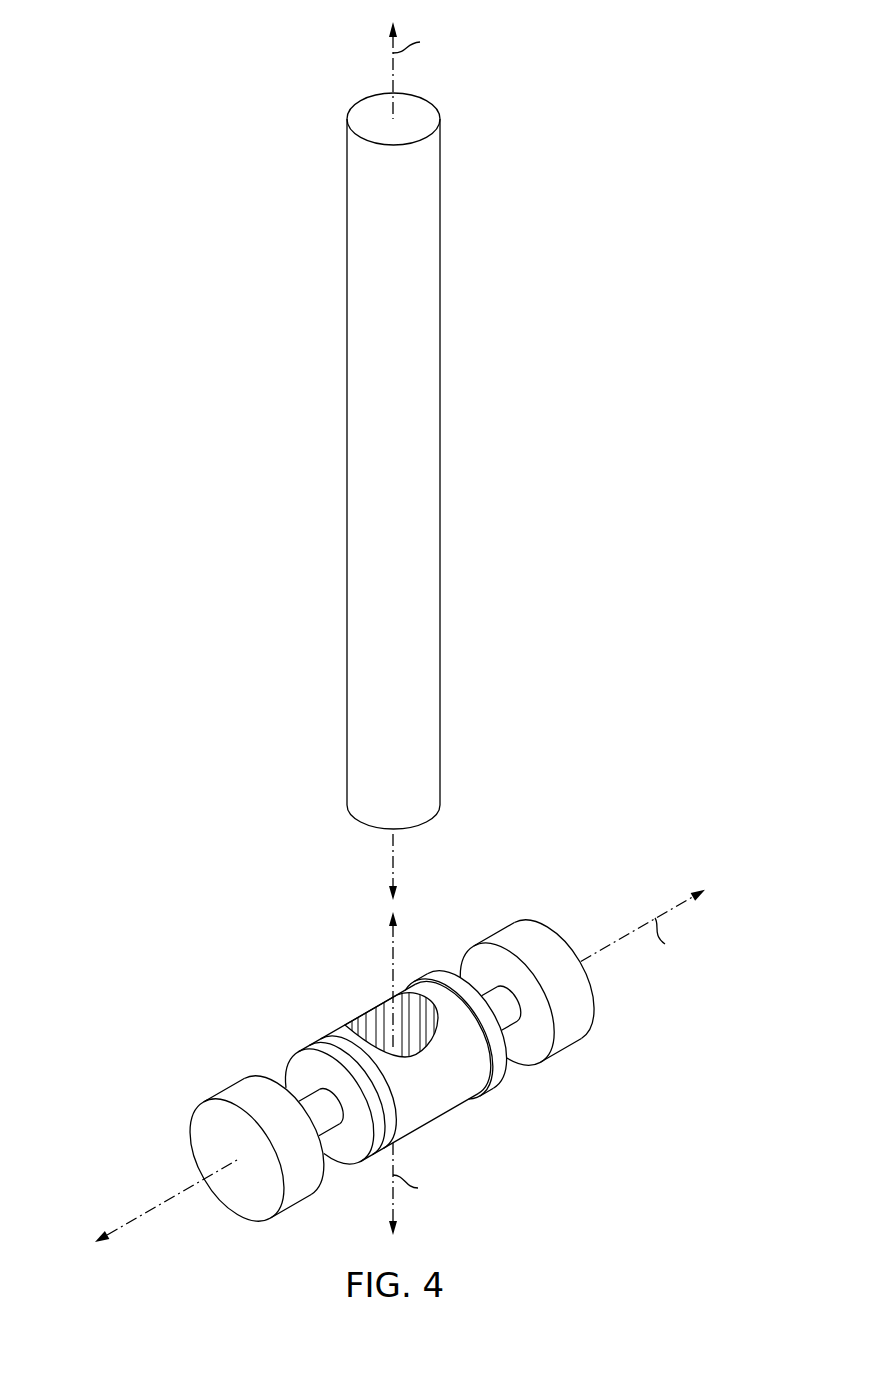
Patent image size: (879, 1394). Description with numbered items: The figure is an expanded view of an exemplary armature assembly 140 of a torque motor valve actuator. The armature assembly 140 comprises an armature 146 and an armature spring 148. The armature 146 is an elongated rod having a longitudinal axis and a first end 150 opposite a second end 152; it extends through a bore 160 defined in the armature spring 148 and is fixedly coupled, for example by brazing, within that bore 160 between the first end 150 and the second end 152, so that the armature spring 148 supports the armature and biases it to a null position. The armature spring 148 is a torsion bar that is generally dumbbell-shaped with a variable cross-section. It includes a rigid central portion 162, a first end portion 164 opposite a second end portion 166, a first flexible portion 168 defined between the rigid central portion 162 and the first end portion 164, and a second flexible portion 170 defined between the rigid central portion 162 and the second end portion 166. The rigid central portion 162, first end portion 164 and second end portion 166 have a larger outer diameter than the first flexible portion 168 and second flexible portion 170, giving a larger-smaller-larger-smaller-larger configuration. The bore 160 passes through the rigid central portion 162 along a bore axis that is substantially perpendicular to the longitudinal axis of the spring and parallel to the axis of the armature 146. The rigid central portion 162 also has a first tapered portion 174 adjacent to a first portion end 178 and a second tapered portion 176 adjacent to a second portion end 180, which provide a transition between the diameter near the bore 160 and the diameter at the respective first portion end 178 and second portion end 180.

The armature assembly 140 is at (670, 232).
The armature 146 is at (527, 118).
The armature spring 148 is at (708, 912).
The first end 150 is at (432, 118).
The second end 152 is at (430, 818).
The bore 160 is at (393, 993).
The rigid central portion 162 is at (480, 1102).
The first end portion 164 is at (262, 1208).
The second end portion 166 is at (548, 935).
The first flexible portion 168 is at (321, 1122).
The second flexible portion 170 is at (507, 1017).
The first tapered portion 174 is at (330, 1035).
The second tapered portion 176 is at (483, 1067).
The first portion end 178 is at (308, 1050).
The second portion end 180 is at (431, 977).